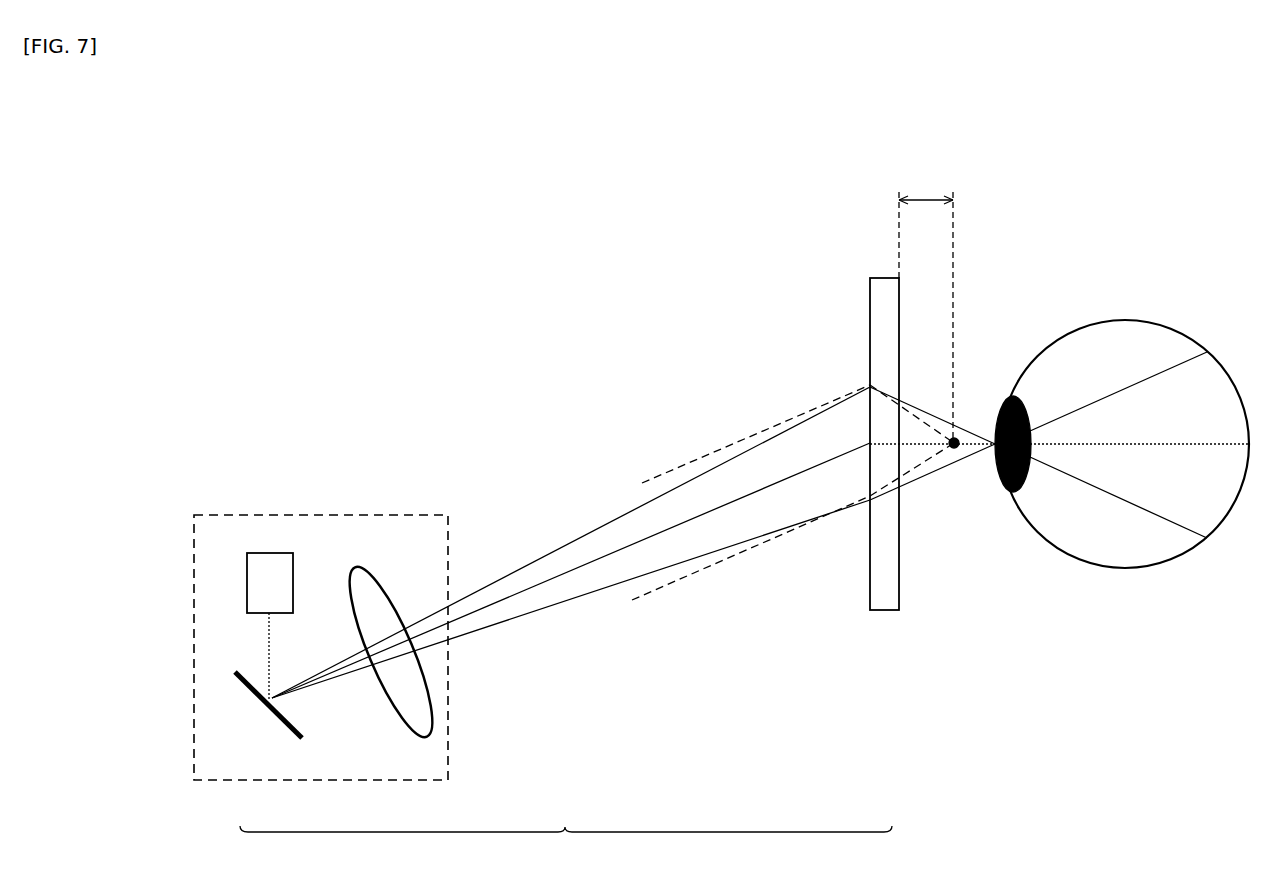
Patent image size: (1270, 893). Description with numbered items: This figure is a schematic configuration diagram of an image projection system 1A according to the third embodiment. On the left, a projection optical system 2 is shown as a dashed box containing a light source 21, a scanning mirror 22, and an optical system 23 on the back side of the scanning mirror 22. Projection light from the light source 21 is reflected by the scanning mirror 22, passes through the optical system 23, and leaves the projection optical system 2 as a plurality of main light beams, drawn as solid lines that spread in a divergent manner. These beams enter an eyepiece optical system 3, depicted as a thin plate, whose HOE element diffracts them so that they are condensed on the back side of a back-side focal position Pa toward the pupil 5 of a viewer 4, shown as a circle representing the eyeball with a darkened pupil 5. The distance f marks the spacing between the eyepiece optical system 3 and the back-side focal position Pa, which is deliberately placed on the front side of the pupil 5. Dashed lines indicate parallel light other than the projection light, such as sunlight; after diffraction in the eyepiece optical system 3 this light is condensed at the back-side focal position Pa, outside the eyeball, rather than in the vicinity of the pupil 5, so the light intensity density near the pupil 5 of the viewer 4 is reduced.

The image projection system 1A is at (566, 848).
The projection optical system 2 is at (320, 514).
The light source 21 is at (268, 553).
The scanning mirror 22 is at (281, 742).
The optical system 23 is at (394, 593).
The eyepiece optical system 3 is at (886, 612).
The viewer 4 is at (1125, 320).
The pupil 5 is at (1008, 398).
The back-side focal position Pa is at (954, 452).
The focal length f is at (926, 305).